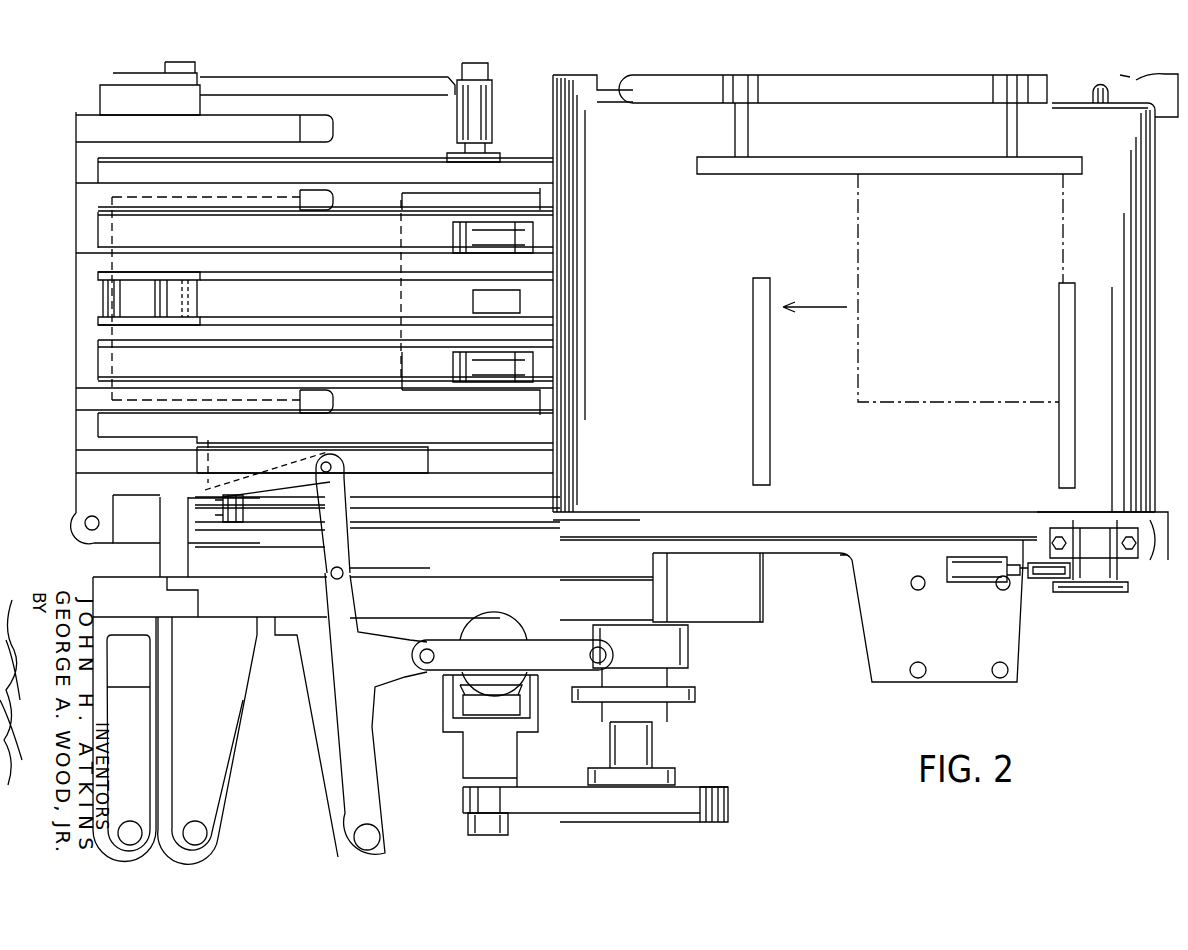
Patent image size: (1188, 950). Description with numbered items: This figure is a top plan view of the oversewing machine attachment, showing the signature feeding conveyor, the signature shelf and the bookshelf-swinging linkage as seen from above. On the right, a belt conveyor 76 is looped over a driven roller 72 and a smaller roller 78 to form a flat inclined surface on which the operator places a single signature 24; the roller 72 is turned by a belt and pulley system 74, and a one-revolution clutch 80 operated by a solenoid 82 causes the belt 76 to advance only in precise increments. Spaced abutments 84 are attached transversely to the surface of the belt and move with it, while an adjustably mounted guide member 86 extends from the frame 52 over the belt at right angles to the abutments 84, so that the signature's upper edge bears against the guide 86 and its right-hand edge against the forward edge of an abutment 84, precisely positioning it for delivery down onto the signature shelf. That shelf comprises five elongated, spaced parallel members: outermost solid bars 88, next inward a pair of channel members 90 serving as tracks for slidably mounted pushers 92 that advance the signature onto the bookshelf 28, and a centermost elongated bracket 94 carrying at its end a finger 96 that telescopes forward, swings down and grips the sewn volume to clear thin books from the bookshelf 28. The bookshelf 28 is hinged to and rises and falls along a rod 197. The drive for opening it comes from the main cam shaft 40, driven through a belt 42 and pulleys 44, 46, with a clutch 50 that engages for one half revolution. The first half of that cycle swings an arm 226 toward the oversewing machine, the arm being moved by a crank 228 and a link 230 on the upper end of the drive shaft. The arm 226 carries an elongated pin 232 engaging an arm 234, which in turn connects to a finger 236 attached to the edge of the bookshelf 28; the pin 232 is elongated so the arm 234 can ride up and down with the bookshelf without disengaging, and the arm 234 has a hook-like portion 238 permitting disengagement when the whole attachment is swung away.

The signature 24 is at (975, 405).
The bookshelf 28 is at (392, 474).
The main cam shaft 40 is at (655, 748).
The belt 42 is at (595, 815).
The pulley 44 is at (510, 828).
The pulley 46 is at (712, 790).
The clutch 50 is at (535, 630).
The frame 52 is at (835, 538).
The roller 72 is at (1150, 555).
The belt and pulley system 74 is at (1102, 604).
The belt conveyor 76 is at (941, 477).
The smaller roller 78 is at (548, 100).
The one-revolution clutch 80 is at (1050, 580).
The solenoid 82 is at (975, 582).
The abutments 84 is at (770, 415).
The guide member 86 is at (946, 137).
The solid bars 88 is at (414, 142).
The channel members 90 is at (444, 200).
The pushers 92 is at (520, 200).
The elongated bracket 94 is at (385, 283).
The finger 96 is at (110, 285).
The rod 197 is at (85, 522).
The arm 226 is at (388, 671).
The crank 228 is at (555, 680).
The link 230 is at (490, 650).
The elongated pin 232 is at (344, 572).
The arm 234 is at (338, 492).
The finger 236 is at (292, 490).
The hook-like portion 238 is at (360, 578).